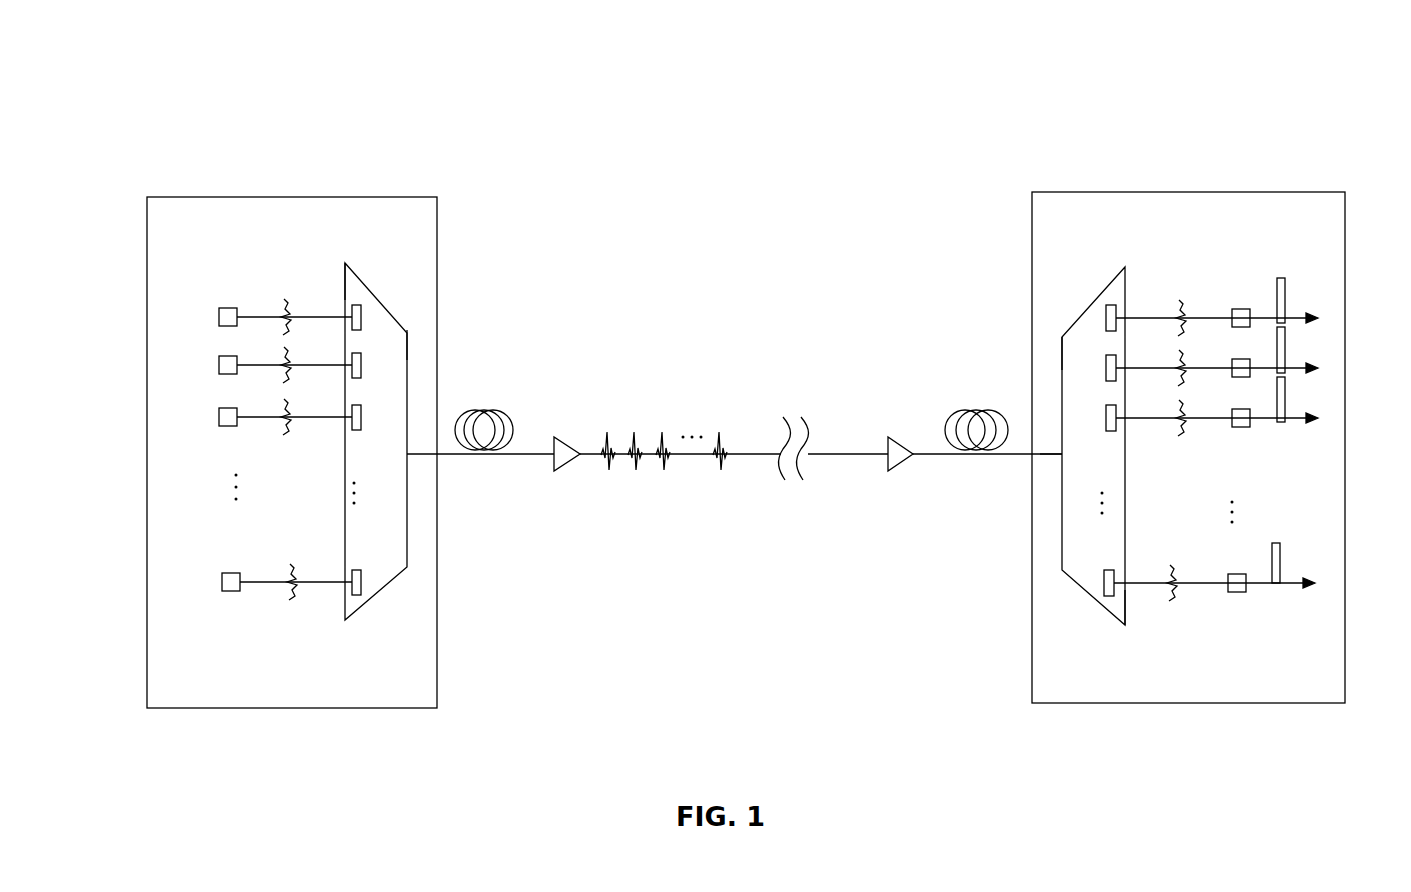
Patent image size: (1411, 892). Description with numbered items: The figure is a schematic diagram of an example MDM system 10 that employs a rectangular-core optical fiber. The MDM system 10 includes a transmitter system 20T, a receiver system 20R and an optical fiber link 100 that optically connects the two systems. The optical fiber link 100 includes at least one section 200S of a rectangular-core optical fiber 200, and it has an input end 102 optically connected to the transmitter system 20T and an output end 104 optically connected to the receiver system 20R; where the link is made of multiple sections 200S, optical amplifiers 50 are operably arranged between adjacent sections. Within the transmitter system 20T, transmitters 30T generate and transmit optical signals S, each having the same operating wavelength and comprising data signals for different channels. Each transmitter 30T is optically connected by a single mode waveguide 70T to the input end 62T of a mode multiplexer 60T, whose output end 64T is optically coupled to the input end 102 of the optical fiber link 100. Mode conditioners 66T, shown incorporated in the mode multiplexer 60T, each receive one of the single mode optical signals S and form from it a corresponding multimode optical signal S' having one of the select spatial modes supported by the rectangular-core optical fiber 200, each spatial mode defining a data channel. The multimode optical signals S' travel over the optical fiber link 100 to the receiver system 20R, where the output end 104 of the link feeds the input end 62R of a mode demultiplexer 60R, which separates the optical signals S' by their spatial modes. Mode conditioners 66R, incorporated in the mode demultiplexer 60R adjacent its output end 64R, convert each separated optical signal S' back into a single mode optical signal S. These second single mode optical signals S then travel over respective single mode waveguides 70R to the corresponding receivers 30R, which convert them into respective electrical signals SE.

The MDM system 10 is at (240, 80).
The transmitter system 20T is at (232, 684).
The receiver system 20R is at (1322, 683).
The transmitters 30T is at (229, 292).
The receivers 30R is at (1239, 292).
The optical amplifiers 50 is at (568, 463).
The mode multiplexer 60T is at (372, 292).
The mode demultiplexer 60R is at (1102, 292).
The input end 62T is at (334, 270).
The input end 62R is at (1062, 338).
The output end 64T is at (410, 343).
The output end 64R is at (1090, 592).
The mode conditioners 66T is at (363, 318).
The mode conditioners 66R is at (1104, 583).
The single mode waveguide 70T is at (323, 583).
The single mode waveguides 70R is at (1200, 583).
The optical fiber link 100 is at (677, 318).
The input end 102 is at (413, 457).
The output end 104 is at (1053, 460).
The rectangular-core optical fiber 200 is at (582, 428).
The section of rectangular-core optical fiber 200S is at (532, 457).
The optical signals S is at (736, 407).
The multimode optical signals S' is at (665, 411).
The electrical signals SE is at (1288, 292).